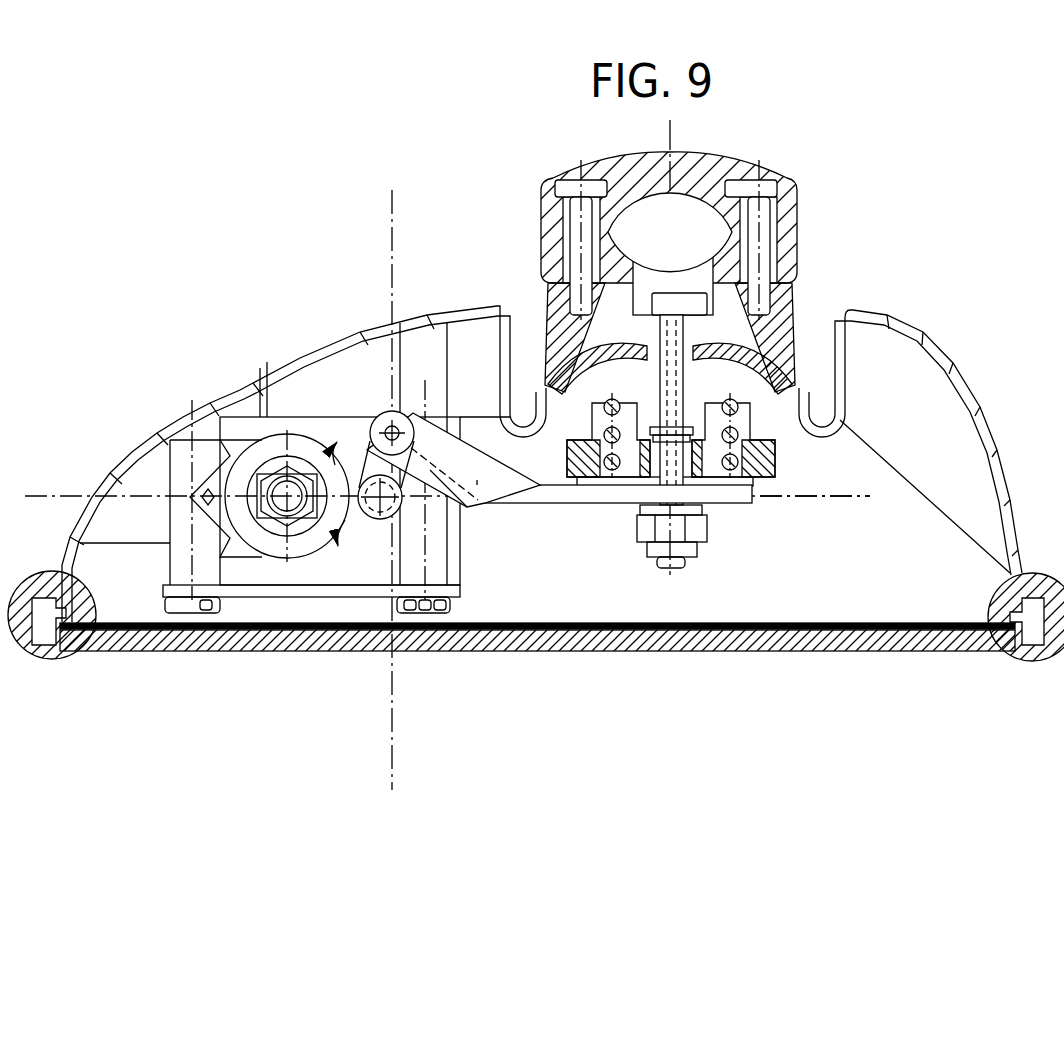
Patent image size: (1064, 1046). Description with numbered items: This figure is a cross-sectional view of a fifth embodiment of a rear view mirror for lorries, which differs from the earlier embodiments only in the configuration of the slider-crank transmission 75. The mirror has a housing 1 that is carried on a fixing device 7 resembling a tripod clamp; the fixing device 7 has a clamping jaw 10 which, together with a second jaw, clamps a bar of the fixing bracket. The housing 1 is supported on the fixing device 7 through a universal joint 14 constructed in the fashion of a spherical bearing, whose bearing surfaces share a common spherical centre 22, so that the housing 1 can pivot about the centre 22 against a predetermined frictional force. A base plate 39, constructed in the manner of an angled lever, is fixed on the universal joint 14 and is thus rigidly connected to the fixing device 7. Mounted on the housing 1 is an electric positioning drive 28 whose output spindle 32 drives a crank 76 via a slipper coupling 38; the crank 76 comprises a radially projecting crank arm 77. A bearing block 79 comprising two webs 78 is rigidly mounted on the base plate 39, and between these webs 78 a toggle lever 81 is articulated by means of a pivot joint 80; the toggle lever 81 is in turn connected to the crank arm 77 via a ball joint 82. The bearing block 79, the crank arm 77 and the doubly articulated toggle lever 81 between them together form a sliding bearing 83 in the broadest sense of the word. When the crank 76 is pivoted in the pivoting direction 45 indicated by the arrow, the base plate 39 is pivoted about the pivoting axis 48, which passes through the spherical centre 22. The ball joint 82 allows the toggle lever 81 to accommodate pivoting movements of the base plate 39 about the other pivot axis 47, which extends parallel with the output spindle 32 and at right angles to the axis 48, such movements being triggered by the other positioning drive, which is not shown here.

The housing 1 is at (939, 338).
The fixing device 7 is at (538, 181).
The clamping jaw 10 is at (458, 204).
The universal joint 14 is at (565, 339).
The spherical centre 22 is at (720, 508).
The positioning drive 28 is at (290, 408).
The output spindle 32 is at (248, 522).
The slipper coupling 38 is at (271, 526).
The base plate 39 is at (580, 504).
The pivoting direction 45 is at (345, 512).
The pivot axis 47 is at (828, 498).
The pivoting axis 48 is at (724, 536).
The slider-crank transmission 75 is at (356, 537).
The crank 76 is at (270, 450).
The crank arm 77 is at (350, 440).
The webs 78 is at (427, 432).
The bearing block 79 is at (477, 481).
The pivot joint 80 is at (389, 428).
The toggle lever 81 is at (355, 437).
The ball joint 82 is at (378, 520).
The sliding bearing 83 is at (420, 486).